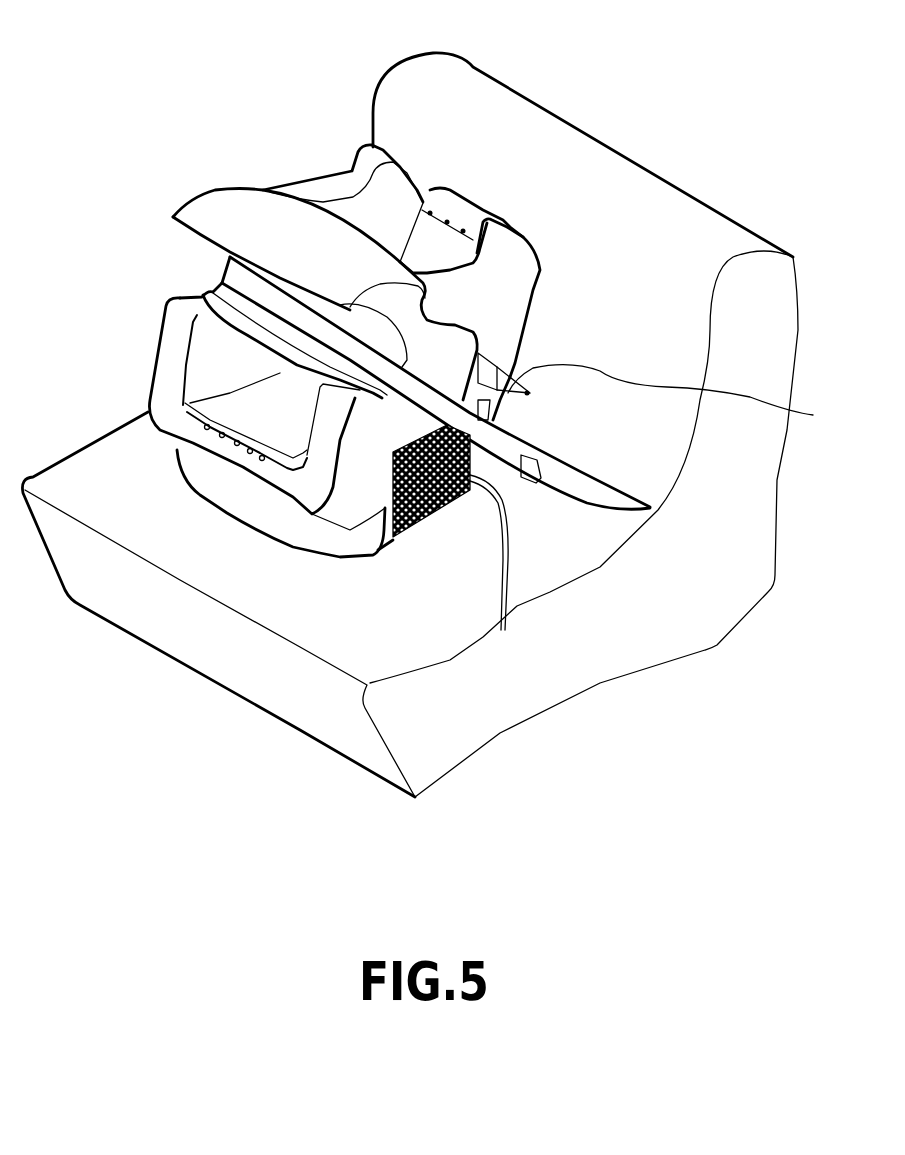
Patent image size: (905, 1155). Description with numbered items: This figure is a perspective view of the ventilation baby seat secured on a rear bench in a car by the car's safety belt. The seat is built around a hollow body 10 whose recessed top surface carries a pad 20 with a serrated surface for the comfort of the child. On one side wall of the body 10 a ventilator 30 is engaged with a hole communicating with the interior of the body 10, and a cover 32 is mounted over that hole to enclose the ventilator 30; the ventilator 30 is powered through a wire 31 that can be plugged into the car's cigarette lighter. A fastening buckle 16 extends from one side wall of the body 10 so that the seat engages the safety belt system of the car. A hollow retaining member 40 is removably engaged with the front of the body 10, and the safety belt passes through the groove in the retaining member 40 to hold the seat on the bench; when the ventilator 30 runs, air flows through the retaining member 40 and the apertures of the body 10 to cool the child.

The hollow body 10 is at (167, 350).
The fastening buckle 16 is at (431, 425).
The pad 20 is at (432, 220).
The ventilator 30 is at (440, 524).
The wire 31 is at (515, 505).
The cover 32 is at (393, 540).
The retaining member 40 is at (207, 200).